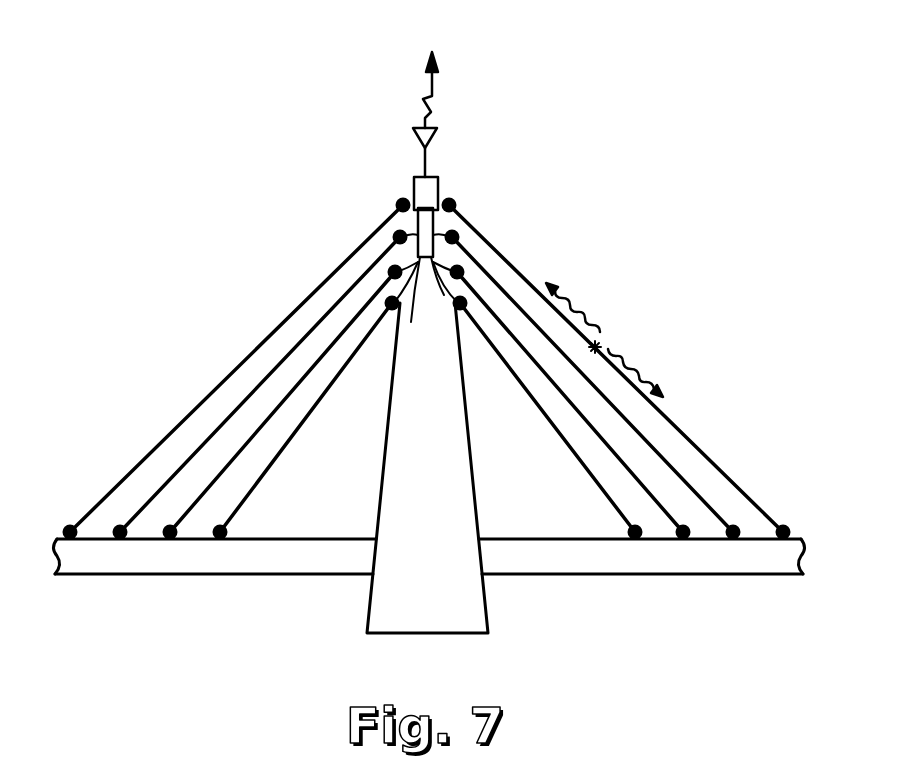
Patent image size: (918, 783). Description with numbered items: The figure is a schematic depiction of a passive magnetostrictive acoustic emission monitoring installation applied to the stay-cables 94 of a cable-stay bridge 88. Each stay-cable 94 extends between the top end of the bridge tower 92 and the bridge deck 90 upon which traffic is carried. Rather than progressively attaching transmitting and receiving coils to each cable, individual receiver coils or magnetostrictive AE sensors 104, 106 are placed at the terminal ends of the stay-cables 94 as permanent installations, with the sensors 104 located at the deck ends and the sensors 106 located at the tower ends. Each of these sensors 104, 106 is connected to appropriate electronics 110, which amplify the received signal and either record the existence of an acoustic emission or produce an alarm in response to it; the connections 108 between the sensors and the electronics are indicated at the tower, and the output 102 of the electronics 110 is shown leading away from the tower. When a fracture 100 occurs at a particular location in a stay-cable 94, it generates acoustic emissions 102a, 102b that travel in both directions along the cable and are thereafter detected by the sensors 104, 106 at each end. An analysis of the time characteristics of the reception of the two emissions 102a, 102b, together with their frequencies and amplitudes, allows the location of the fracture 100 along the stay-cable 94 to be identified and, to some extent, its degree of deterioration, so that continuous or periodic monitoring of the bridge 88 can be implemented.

The bridge 88 is at (305, 228).
The bridge deck 90 is at (308, 538).
The bridge tower 92 is at (479, 497).
The stay-cable 94 is at (240, 353).
The fracture 100 is at (600, 343).
The signal line 102 is at (425, 162).
The acoustic emission 102a is at (573, 297).
The acoustic emission 102b is at (638, 363).
The magnetostrictive AE sensor 104 is at (67, 524).
The magnetostrictive AE sensor 106 is at (401, 199).
The connecting wires 108 is at (395, 224).
The electronics 110 is at (418, 207).